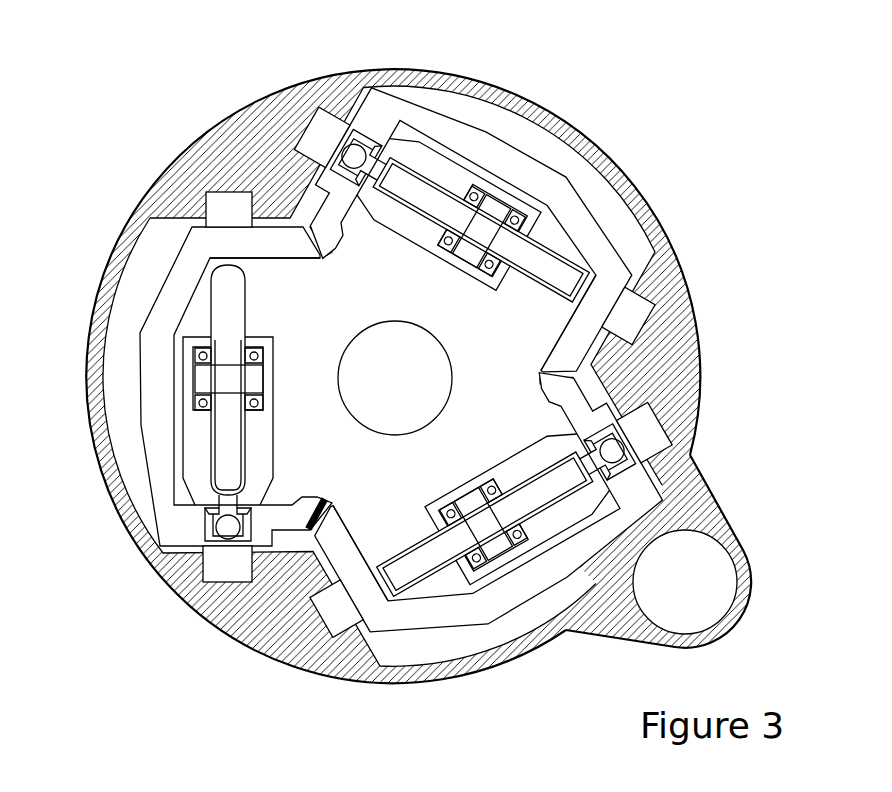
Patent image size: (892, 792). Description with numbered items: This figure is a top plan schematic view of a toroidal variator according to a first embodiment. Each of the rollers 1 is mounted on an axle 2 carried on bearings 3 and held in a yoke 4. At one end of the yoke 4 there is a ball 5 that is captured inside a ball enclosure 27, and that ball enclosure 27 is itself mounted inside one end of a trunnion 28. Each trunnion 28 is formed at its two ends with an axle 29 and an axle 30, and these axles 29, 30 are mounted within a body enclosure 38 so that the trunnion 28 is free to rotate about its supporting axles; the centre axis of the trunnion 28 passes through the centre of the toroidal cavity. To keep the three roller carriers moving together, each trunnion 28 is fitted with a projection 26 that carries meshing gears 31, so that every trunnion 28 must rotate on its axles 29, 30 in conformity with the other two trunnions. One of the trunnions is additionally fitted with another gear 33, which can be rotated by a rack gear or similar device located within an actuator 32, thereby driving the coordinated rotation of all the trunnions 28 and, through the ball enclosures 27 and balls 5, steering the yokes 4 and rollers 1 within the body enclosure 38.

The roller 1 is at (393, 544).
The axle 2 is at (455, 488).
The bearings 3 is at (468, 468).
The yoke 4 is at (276, 422).
The ball 5 is at (610, 447).
The projection 26 is at (263, 264).
The ball enclosure 27 is at (625, 470).
The trunnion 28 is at (160, 275).
The axle 29 is at (215, 192).
The axle 30 is at (226, 588).
The meshing gears 31 is at (327, 253).
The actuator 32 is at (690, 582).
The gear 33 is at (717, 557).
The body enclosure 38 is at (690, 260).